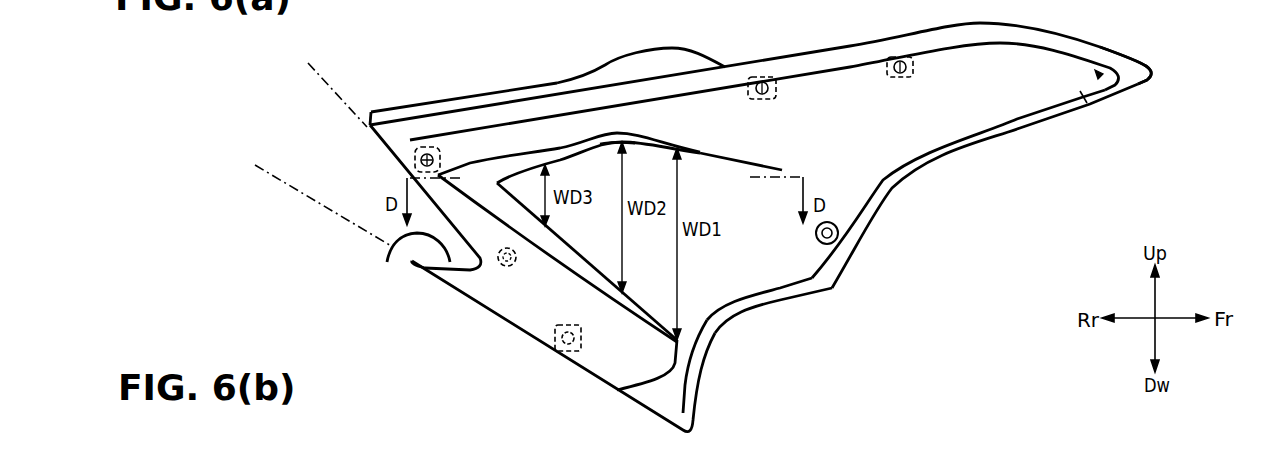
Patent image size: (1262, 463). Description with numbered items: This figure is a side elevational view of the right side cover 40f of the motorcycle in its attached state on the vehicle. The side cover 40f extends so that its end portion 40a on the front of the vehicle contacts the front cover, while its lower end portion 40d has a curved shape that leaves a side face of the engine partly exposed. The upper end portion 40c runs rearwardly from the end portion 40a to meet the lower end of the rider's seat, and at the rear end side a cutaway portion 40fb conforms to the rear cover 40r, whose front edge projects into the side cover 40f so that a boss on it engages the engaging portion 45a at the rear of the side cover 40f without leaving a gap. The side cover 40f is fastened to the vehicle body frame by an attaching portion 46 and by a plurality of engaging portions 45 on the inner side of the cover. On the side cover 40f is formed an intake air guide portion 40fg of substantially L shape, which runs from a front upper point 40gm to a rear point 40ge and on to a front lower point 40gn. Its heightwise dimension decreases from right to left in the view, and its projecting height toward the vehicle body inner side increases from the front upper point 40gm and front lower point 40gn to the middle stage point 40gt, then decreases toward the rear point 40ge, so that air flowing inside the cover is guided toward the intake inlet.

The rear cover 40r is at (322, 80).
The cutaway portion 40fb is at (387, 262).
The rear point 40ge is at (445, 172).
The upper end portion 40c is at (557, 80).
The middle stage point 40gt is at (632, 158).
The front upper point 40gm is at (783, 167).
The end portion 40a is at (1152, 80).
The side cover 40f is at (932, 169).
The lower end portion 40d is at (808, 296).
The intake air guide portion 40fg is at (650, 257).
The front lower point 40gn is at (617, 390).
The attaching portion 46 is at (838, 245).
The engaging portion 45a is at (427, 152).
The engaging portions 45 is at (732, 0).